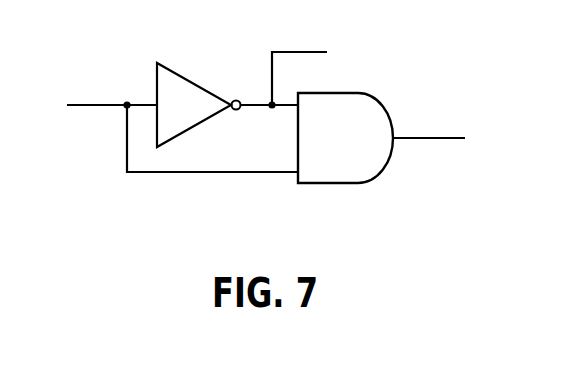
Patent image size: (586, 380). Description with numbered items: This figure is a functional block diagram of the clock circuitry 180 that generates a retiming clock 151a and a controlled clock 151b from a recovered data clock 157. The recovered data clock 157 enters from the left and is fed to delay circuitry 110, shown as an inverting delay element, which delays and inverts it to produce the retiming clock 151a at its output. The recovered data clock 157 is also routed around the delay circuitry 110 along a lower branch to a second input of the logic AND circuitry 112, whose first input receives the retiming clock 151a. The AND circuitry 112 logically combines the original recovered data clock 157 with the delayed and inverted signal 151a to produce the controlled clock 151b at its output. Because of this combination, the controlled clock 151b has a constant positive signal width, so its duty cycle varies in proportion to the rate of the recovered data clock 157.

The clock circuitry 180 is at (125, 195).
The recovered data clock 157 is at (91, 108).
The delay circuitry 110 is at (187, 75).
The retiming clock 151a is at (322, 44).
The logic AND circuitry 112 is at (358, 93).
The controlled clock 151b is at (452, 133).